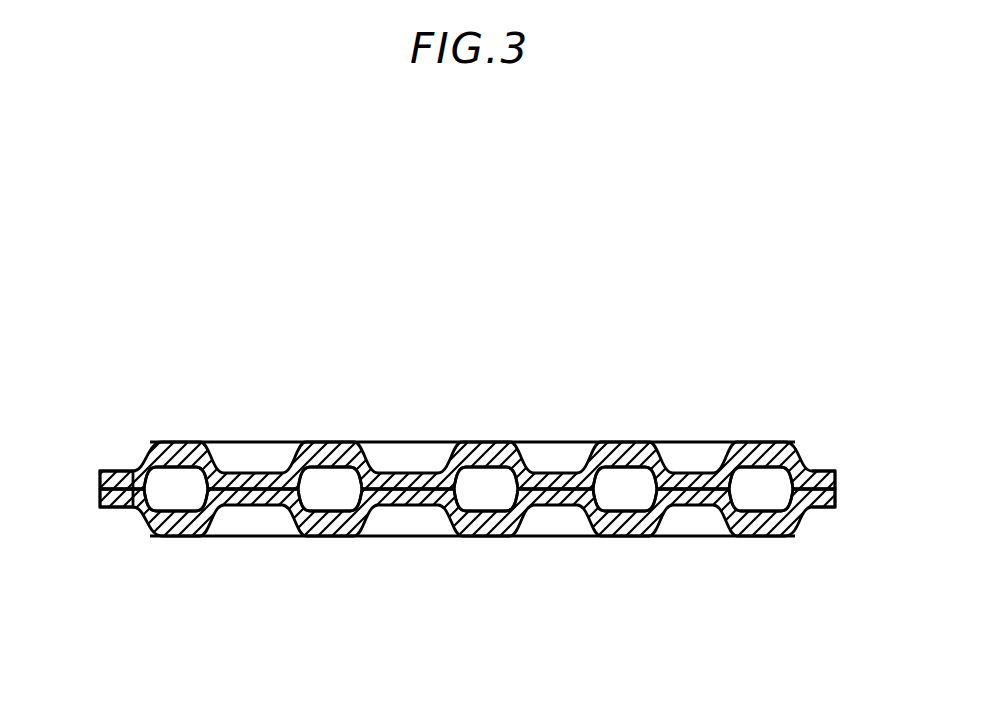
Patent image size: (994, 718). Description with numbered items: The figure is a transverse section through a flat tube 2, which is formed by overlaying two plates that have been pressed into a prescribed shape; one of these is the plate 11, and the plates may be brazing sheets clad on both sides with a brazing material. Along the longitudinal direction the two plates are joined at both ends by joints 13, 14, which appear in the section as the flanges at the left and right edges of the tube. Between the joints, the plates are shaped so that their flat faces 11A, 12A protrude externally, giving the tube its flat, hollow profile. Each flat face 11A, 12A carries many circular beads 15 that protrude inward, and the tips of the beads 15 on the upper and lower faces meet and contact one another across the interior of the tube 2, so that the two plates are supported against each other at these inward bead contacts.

The flat tube 2 is at (488, 395).
The flat face 11A is at (554, 438).
The flat face 12A is at (564, 544).
The plate 11 is at (636, 445).
The joint 13 is at (815, 470).
The joint 14 is at (110, 471).
The circular bead 15 is at (278, 443).